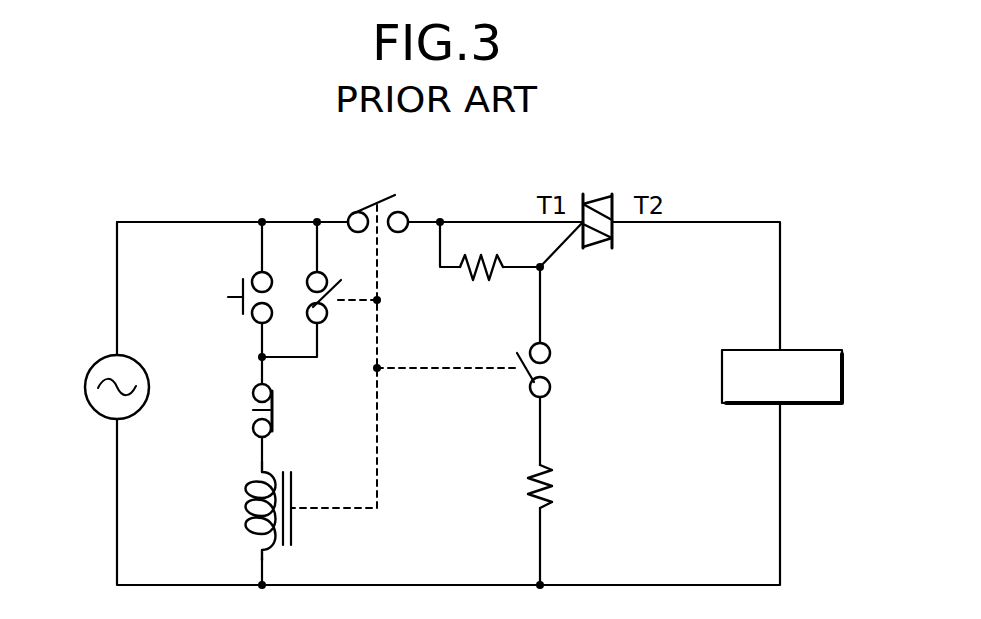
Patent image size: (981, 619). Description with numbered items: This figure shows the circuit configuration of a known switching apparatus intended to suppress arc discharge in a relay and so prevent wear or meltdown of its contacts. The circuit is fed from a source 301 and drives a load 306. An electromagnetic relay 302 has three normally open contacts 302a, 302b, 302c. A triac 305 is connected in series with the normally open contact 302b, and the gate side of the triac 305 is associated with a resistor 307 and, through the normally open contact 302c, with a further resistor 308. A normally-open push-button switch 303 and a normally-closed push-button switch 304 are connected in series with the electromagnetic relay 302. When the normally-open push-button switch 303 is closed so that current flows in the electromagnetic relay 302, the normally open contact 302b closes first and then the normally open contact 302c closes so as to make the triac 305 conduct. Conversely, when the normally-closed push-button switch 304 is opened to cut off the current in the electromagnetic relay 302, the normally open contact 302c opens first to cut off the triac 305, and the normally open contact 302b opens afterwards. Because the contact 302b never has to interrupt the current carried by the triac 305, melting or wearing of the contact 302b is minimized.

The AC power source 301 is at (96, 364).
The electromagnetic relay 302 is at (250, 500).
The normally open contact 302a is at (332, 305).
The normally open contact 302b is at (369, 210).
The normally open contact 302c is at (555, 370).
The normally-open push-button switch 303 is at (236, 289).
The normally-closed push-button switch 304 is at (250, 418).
The triac 305 is at (600, 195).
The load 306 is at (823, 350).
The resistor 307 is at (471, 283).
The resistor 308 is at (522, 482).